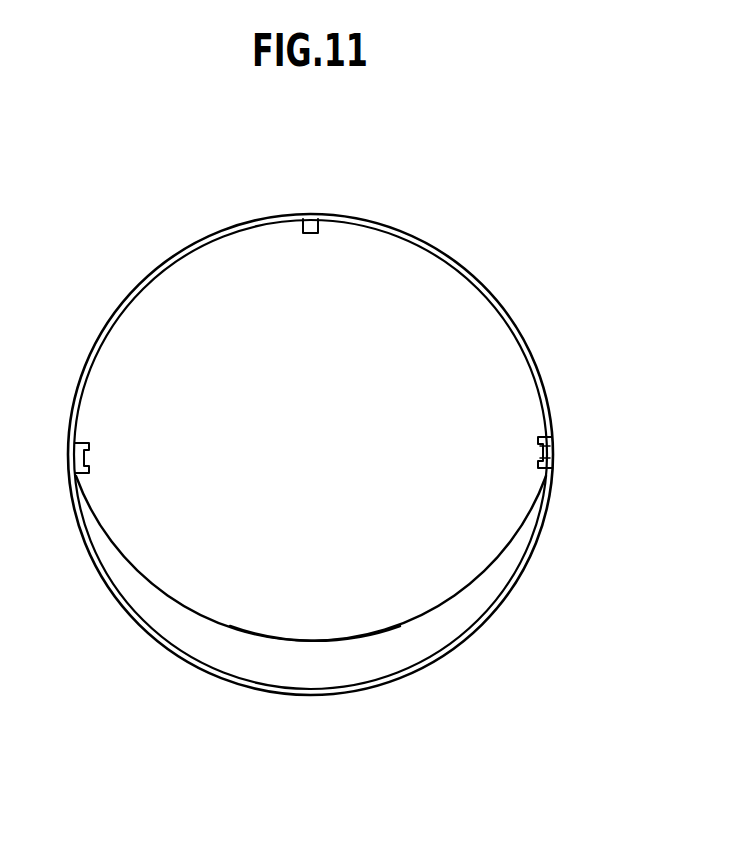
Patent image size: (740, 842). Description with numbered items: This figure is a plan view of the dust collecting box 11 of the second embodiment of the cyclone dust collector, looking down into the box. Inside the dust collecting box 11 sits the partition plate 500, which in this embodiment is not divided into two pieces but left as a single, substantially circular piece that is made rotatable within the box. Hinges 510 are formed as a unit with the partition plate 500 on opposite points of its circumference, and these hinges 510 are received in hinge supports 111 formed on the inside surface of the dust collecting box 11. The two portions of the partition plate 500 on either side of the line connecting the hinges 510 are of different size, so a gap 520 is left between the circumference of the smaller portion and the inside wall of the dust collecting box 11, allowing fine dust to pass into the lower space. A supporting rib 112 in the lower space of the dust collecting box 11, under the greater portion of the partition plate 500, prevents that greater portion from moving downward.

The dust collecting box 11 is at (553, 410).
The supporting rib 112 is at (335, 216).
The hinge support 111 is at (553, 462).
The hinge 510 is at (548, 452).
The partition plate 500 is at (505, 516).
The gap 520 is at (368, 665).